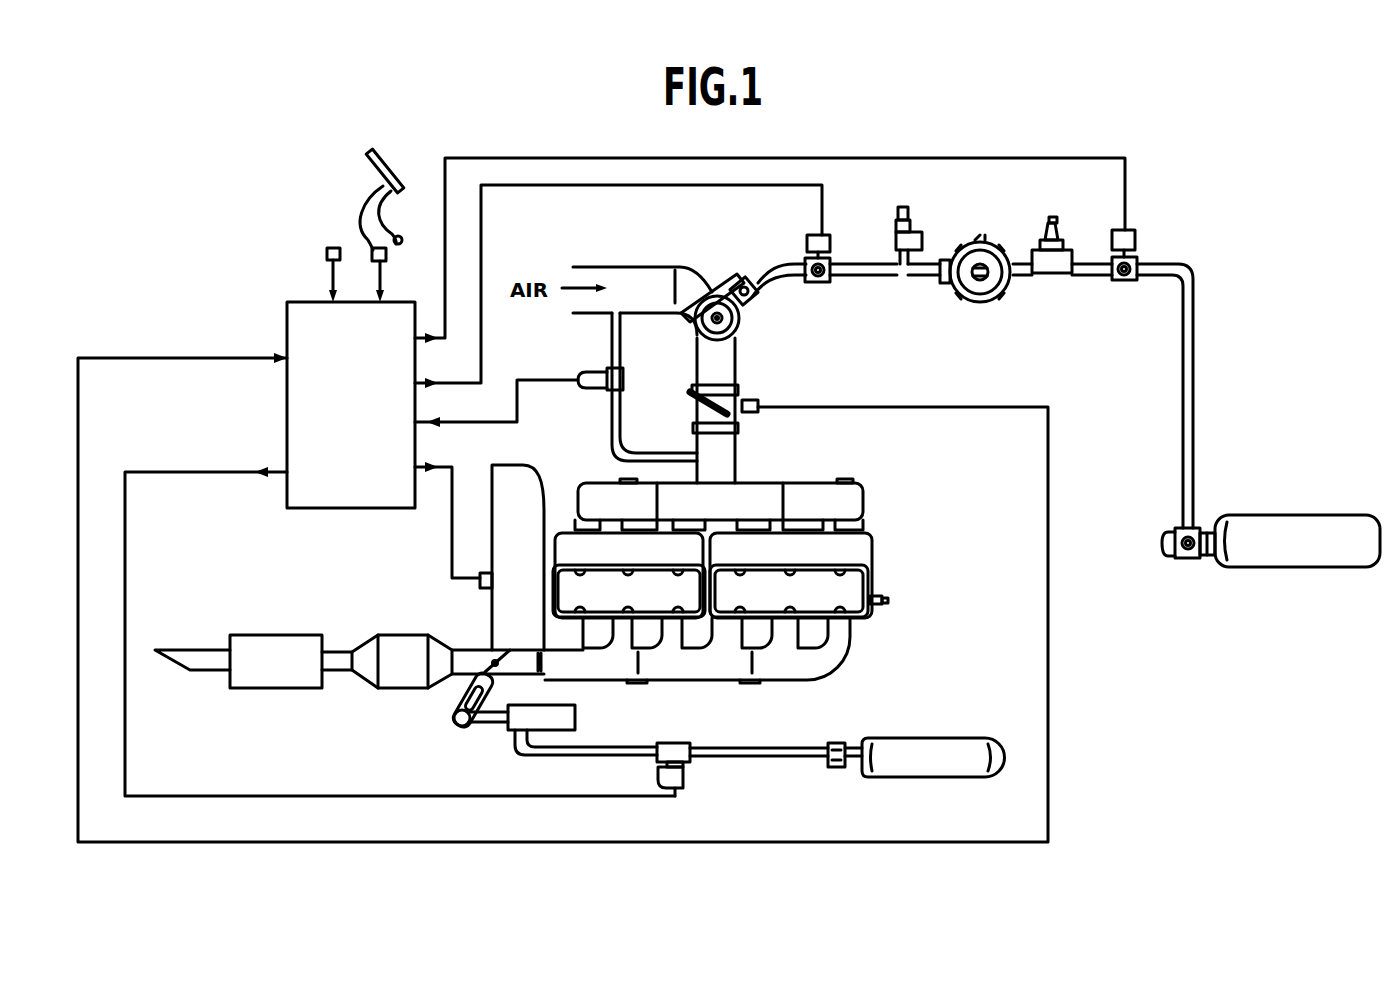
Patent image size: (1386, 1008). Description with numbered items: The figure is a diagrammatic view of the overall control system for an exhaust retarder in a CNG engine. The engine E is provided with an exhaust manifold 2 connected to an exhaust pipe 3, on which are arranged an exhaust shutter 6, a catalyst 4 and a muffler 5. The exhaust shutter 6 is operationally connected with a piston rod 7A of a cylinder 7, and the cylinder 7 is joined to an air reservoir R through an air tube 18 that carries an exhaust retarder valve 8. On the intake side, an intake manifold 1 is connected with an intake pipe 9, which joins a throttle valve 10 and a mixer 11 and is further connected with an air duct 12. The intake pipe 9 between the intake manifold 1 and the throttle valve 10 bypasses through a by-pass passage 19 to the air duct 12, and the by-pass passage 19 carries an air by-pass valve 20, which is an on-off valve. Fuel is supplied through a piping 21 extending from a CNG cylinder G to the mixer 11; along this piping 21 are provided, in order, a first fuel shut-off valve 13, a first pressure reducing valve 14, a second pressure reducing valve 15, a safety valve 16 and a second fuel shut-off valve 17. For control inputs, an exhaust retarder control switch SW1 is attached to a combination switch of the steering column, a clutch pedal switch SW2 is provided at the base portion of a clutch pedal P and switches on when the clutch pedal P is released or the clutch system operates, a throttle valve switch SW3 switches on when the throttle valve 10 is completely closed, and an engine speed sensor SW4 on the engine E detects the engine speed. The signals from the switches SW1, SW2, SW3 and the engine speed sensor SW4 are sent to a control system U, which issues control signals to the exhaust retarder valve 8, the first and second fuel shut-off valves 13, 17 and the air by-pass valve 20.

The intake manifold 1 is at (860, 500).
The exhaust manifold 2 is at (710, 668).
The exhaust pipe 3 is at (460, 650).
The catalyst 4 is at (387, 637).
The muffler 5 is at (258, 635).
The exhaust shutter 6 is at (452, 677).
The cylinder 7 is at (573, 712).
The piston rod 7A is at (486, 728).
The exhaust retarder valve 8 is at (683, 777).
The intake pipe 9 is at (737, 440).
The throttle valve 10 is at (702, 415).
The mixer 11 is at (748, 315).
The air duct 12 is at (633, 267).
The first fuel shut-off valve 13 is at (1135, 237).
The first pressure reducing valve 14 is at (1058, 232).
The second pressure reducing valve 15 is at (992, 280).
The safety valve 16 is at (908, 212).
The second fuel shut-off valve 17 is at (805, 242).
The air tube 18 is at (768, 750).
The by-pass passage 19 is at (610, 350).
The air by-pass valve 20 is at (588, 392).
The piping 21 is at (1195, 356).
The engine E is at (860, 627).
The CNG cylinder G is at (1303, 513).
The clutch pedal P is at (390, 158).
The air reservoir R is at (983, 738).
The control system U is at (287, 418).
The exhaust retarder control switch SW1 is at (327, 256).
The clutch pedal switch SW2 is at (372, 253).
The throttle valve switch SW3 is at (755, 403).
The engine speed sensor SW4 is at (478, 587).